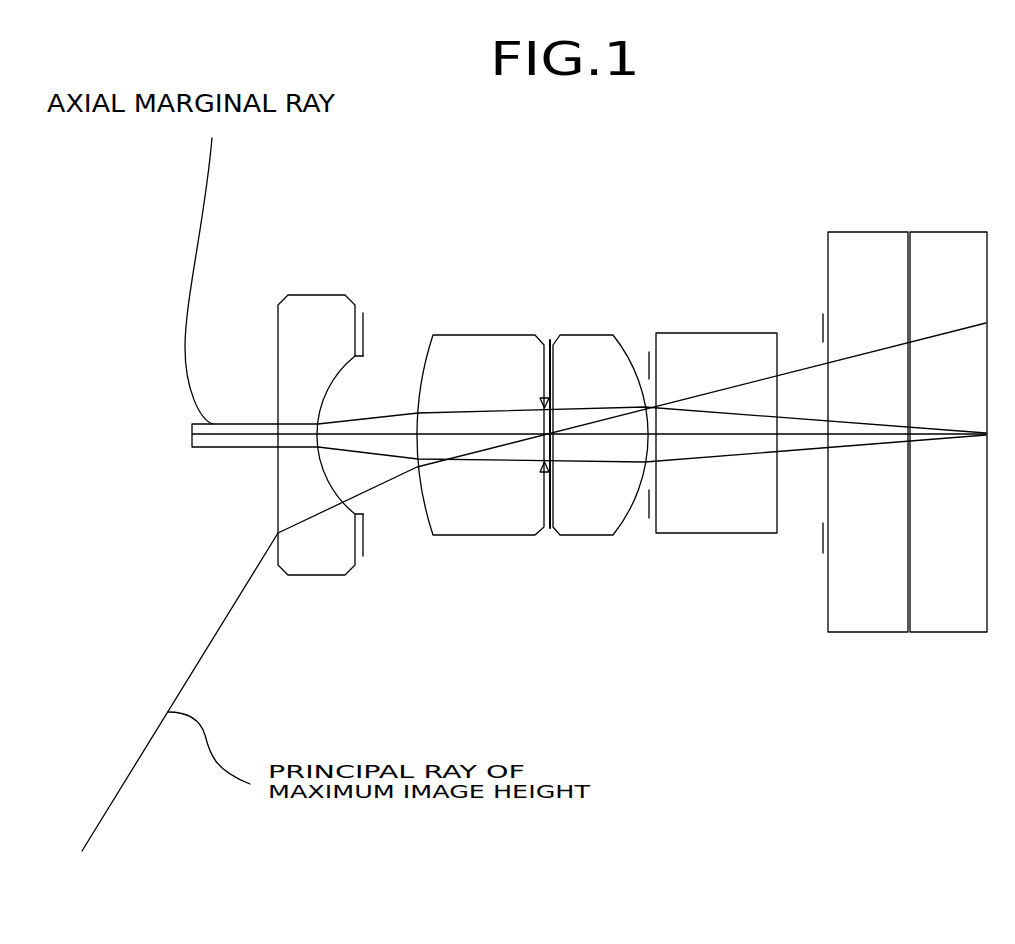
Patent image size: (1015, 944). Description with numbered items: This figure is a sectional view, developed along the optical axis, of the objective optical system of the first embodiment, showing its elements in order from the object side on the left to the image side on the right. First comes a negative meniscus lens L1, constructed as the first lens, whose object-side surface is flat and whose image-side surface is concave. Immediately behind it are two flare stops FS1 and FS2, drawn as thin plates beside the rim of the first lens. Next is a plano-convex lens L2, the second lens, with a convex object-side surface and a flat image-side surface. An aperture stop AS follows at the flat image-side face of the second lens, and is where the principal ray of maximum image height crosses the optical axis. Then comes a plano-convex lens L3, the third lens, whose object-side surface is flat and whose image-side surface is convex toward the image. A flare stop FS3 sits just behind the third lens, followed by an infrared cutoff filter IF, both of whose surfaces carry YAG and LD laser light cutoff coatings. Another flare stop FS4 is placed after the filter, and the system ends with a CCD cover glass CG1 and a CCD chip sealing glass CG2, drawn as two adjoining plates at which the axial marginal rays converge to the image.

The negative meniscus lens L1 is at (320, 295).
The plano-convex lens L2 is at (482, 335).
The plano-convex lens L3 is at (580, 335).
The aperture stop AS is at (544, 492).
The flare stop FS1 is at (355, 535).
The flare stop FS2 is at (367, 535).
The flare stop FS3 is at (648, 503).
The flare stop FS4 is at (822, 540).
The infrared cutoff filter IF is at (712, 333).
The CCD cover glass CG1 is at (863, 232).
The CCD chip sealing glass CG2 is at (948, 232).